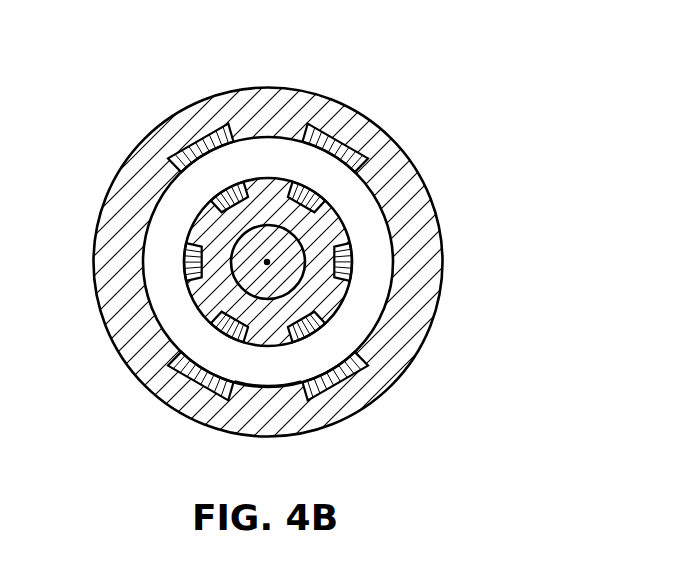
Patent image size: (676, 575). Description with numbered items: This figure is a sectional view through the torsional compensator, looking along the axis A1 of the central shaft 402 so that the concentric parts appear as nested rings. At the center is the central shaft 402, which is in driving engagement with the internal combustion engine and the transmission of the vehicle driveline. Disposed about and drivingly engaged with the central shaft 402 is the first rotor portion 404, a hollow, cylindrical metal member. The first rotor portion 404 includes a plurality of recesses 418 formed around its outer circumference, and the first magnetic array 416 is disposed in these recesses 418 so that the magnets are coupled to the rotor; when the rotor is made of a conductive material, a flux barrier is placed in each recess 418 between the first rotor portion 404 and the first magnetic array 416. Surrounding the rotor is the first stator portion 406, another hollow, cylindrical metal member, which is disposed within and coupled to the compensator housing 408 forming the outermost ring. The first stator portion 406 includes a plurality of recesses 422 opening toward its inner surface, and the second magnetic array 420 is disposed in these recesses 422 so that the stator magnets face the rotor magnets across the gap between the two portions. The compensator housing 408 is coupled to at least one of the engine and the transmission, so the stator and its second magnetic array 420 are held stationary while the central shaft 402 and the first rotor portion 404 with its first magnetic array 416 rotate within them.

The central shaft 402 is at (283, 276).
The first rotor portion 404 is at (356, 213).
The first stator portion 406 is at (333, 90).
The compensator housing 408 is at (267, 87).
The first magnetic array 416 is at (312, 183).
The recesses 418 is at (190, 283).
The second magnetic array 420 is at (198, 140).
The recesses 422 is at (229, 386).
The rotation axis A1 is at (266, 262).